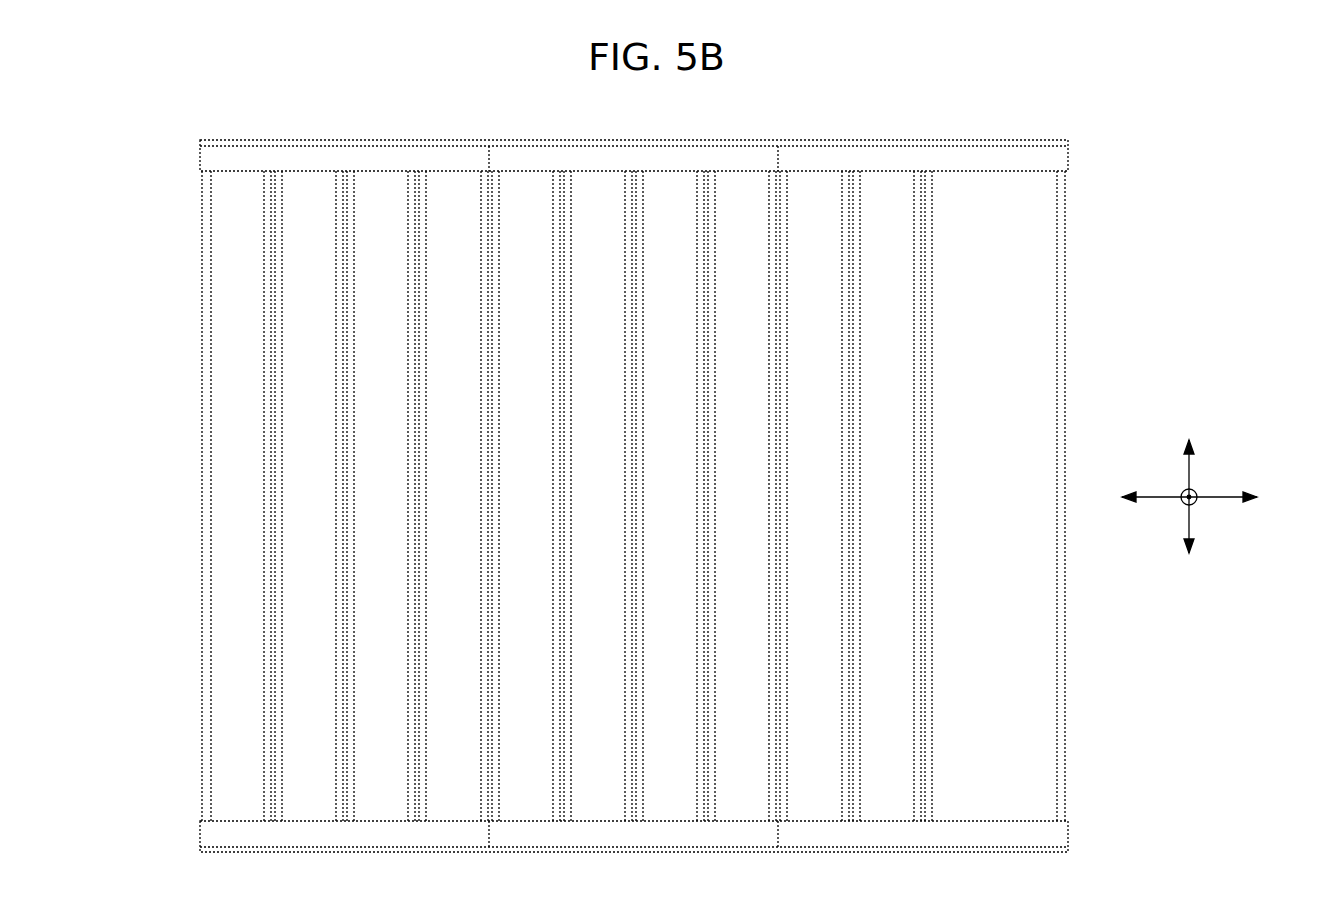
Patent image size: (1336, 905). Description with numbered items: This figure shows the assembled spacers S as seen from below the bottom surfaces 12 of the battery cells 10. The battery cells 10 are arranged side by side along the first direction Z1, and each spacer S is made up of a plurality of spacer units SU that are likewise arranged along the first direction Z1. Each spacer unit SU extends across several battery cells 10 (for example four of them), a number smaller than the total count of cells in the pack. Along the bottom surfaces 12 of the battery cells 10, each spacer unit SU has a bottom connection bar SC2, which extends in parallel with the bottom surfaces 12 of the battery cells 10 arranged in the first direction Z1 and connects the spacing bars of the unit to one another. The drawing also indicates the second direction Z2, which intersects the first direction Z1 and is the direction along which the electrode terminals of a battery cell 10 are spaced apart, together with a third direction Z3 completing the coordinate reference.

The spacer S is at (1032, 121).
The battery cell 10 is at (230, 238).
The bottom surface 12 is at (591, 496).
The bottom connection bar SC2 is at (1068, 160).
The spacer unit SU is at (489, 132).
The first direction Z1 is at (1208, 498).
The second direction Z2 is at (1193, 483).
The third direction Z3 is at (1205, 485).